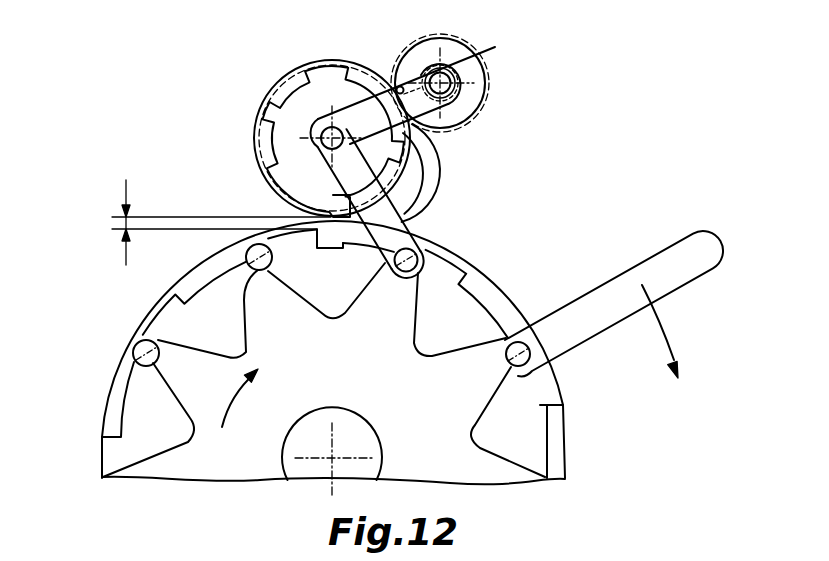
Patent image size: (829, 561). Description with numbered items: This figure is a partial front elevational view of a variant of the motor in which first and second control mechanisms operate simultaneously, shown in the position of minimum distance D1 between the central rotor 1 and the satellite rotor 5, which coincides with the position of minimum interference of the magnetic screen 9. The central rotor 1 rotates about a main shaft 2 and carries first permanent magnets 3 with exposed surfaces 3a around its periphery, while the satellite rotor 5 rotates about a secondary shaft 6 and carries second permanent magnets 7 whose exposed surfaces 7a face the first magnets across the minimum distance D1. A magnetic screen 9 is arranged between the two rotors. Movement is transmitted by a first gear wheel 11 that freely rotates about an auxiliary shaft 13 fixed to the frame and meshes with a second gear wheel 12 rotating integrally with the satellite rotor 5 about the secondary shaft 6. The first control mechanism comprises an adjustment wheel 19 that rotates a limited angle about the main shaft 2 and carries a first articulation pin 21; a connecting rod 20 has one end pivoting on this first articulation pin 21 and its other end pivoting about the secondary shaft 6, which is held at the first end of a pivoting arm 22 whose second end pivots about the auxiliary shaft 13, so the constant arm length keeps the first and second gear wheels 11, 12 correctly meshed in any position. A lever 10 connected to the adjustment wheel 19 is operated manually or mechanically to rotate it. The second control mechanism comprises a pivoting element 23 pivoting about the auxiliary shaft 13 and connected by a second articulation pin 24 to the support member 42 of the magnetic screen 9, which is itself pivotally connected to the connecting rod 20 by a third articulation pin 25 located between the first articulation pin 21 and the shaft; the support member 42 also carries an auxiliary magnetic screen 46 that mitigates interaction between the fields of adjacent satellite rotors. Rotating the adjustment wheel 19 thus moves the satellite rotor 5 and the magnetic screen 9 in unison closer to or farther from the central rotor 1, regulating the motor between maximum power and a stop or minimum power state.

The central rotor 1 is at (98, 463).
The main shaft 2 is at (349, 443).
The first permanent magnets 3 is at (346, 250).
The exposed surfaces of the first permanent magnets 3a is at (112, 386).
The satellite rotor 5 is at (299, 117).
The secondary shaft 6 is at (320, 128).
The second permanent magnets 7 is at (258, 118).
The exposed surfaces of the second permanent magnets 7a is at (252, 143).
The magnetic screen 9 is at (306, 211).
The lever 10 is at (658, 262).
The first gear wheel 11 is at (480, 90).
The second gear wheel 12 is at (272, 90).
The auxiliary shaft 13 is at (478, 60).
The adjustment wheel 19 is at (206, 360).
The connecting rod 20 is at (413, 228).
The first articulation pin 21 is at (401, 278).
The pivoting arm 22 is at (347, 77).
The pivoting element 23 is at (435, 43).
The second articulation pin 24 is at (395, 82).
The third articulation pin 25 is at (413, 193).
The support member 42 is at (438, 168).
The auxiliary magnetic screen 46 is at (478, 117).
The position of minimum distance D1 is at (203, 222).